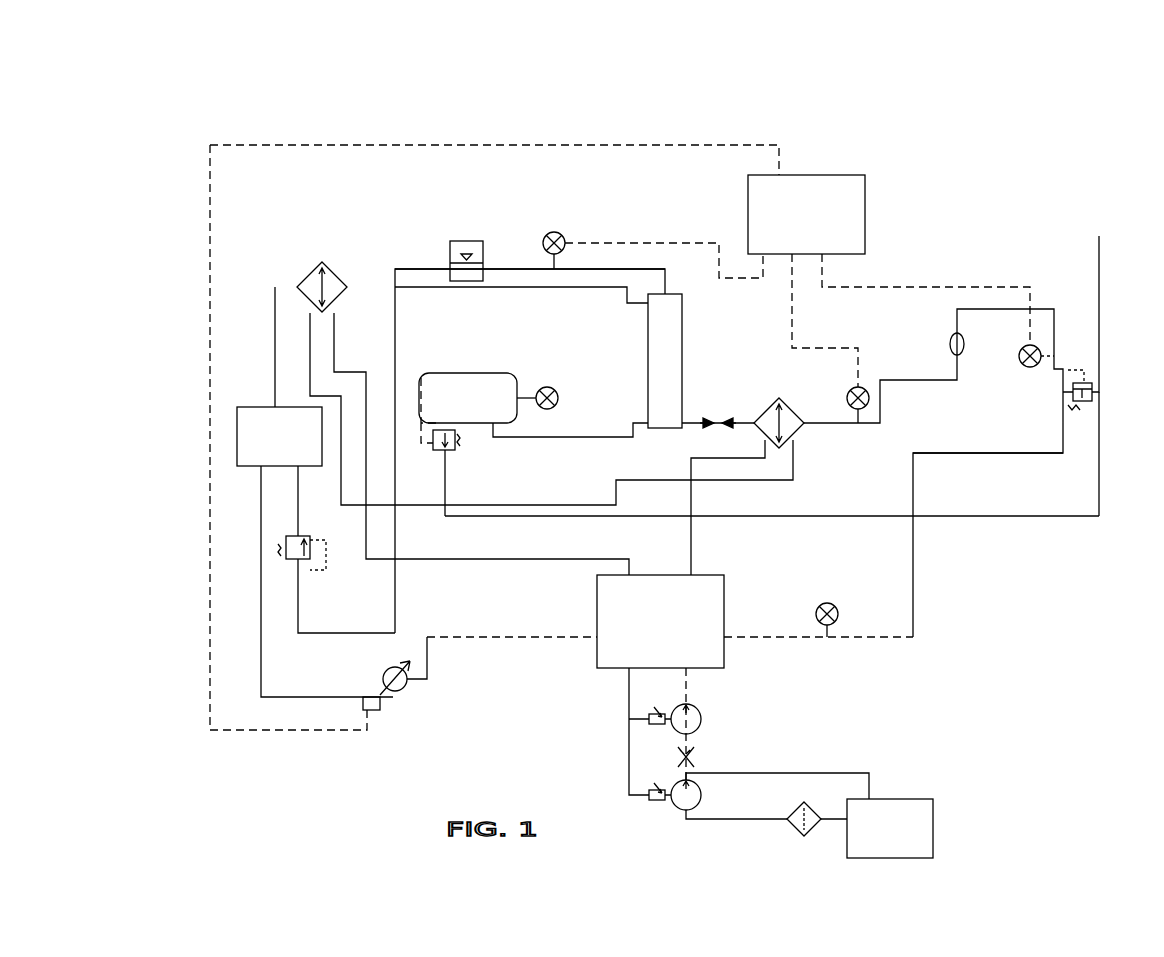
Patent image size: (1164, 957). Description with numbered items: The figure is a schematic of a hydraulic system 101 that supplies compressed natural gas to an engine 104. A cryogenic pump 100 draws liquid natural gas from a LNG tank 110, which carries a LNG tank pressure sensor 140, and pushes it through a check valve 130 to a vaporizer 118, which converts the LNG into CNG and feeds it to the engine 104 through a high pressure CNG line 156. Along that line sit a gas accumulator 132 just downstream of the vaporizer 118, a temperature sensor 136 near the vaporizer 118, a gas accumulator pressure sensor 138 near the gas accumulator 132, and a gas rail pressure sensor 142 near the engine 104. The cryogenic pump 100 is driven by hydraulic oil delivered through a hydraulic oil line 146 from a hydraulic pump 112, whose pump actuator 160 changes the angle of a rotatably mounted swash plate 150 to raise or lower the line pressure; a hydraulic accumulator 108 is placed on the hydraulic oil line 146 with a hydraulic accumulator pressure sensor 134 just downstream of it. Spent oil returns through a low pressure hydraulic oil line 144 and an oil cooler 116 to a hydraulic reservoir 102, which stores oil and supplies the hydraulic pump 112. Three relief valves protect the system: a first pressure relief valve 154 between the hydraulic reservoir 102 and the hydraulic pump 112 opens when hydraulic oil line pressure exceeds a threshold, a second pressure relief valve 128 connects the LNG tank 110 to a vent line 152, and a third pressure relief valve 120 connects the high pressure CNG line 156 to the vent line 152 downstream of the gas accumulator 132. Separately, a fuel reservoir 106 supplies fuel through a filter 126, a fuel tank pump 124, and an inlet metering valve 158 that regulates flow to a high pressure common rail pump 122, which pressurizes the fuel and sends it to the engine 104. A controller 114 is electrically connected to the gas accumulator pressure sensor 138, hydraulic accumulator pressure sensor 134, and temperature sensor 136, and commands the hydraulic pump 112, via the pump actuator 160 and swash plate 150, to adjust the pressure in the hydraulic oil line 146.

The cryogenic pump 100 is at (686, 352).
The hydraulic system 101 is at (203, 130).
The hydraulic reservoir 102 is at (256, 405).
The engine 104 is at (655, 575).
The fuel reservoir 106 is at (892, 799).
The hydraulic accumulator 108 is at (466, 241).
The LNG tank 110 is at (466, 373).
The hydraulic pump 112 is at (381, 675).
The controller 114 is at (865, 222).
The oil cooler 116 is at (312, 268).
The vaporizer 118 is at (790, 440).
The third pressure relief valve 120 is at (1080, 383).
The high pressure common rail pump 122 is at (702, 716).
The fuel tank pump 124 is at (702, 795).
The filter 126 is at (810, 803).
The second pressure relief valve 128 is at (458, 443).
The check valve 130 is at (703, 428).
The gas accumulator 132 is at (950, 344).
The hydraulic accumulator pressure sensor 134 is at (556, 232).
The temperature sensor 136 is at (846, 396).
The gas accumulator pressure sensor 138 is at (1027, 368).
The LNG tank pressure sensor 140 is at (545, 387).
The gas rail pressure sensor 142 is at (830, 603).
The low pressure hydraulic oil line 144 is at (605, 290).
The hydraulic oil line 146 is at (510, 268).
The swash plate 150 is at (417, 688).
The vent line 152 is at (1010, 518).
The first pressure relief valve 154 is at (300, 560).
The high pressure CNG line 156 is at (953, 455).
The inlet metering valve 158 is at (698, 757).
The pump actuator 160 is at (372, 711).